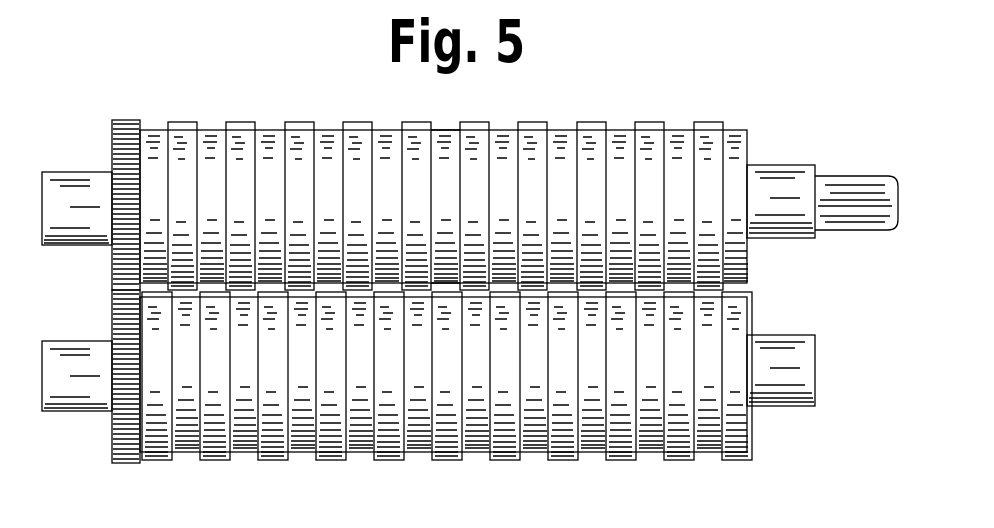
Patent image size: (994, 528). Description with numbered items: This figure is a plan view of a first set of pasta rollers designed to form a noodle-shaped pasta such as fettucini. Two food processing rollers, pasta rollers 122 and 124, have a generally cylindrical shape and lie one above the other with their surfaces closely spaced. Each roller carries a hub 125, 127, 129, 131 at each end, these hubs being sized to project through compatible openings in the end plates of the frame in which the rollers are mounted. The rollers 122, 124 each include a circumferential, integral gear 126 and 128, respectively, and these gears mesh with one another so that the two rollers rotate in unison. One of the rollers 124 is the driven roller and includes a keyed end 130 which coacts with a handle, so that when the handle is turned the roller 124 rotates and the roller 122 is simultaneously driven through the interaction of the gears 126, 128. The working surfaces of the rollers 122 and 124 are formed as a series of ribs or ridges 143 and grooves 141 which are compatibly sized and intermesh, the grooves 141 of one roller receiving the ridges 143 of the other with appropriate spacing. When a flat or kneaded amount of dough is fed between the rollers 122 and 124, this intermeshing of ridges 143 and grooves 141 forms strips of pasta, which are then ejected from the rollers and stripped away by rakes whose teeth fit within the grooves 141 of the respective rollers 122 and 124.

The pasta roller 122 is at (444, 176).
The pasta roller 124 is at (335, 443).
The hub 125 is at (758, 362).
The integral gear 126 is at (130, 427).
The hub 127 is at (772, 180).
The integral gear 128 is at (122, 142).
The hub 129 is at (75, 215).
The keyed end 130 is at (849, 183).
The hub 131 is at (68, 358).
The grooves 141 is at (443, 128).
The ribs or ridges 143 is at (237, 123).